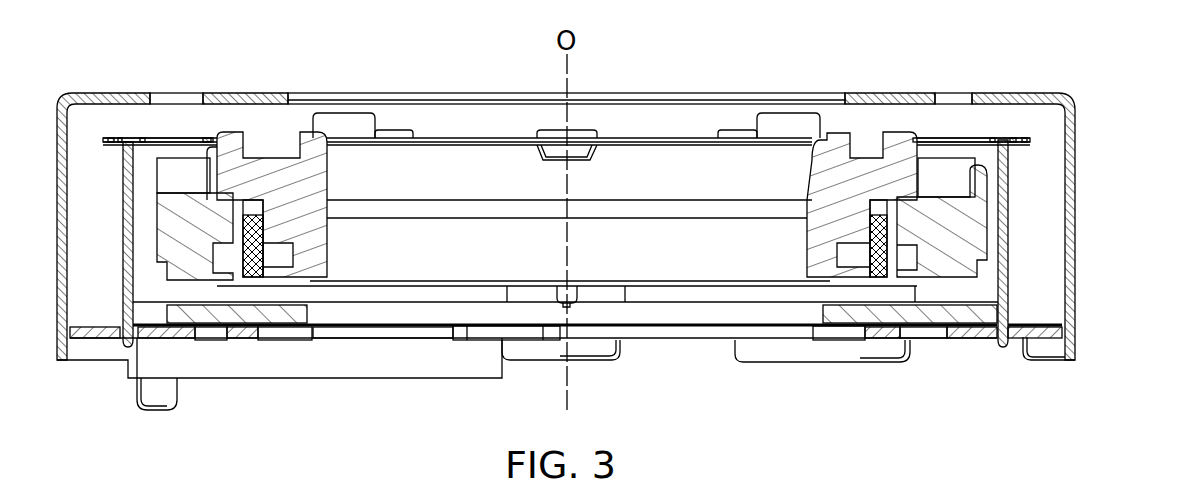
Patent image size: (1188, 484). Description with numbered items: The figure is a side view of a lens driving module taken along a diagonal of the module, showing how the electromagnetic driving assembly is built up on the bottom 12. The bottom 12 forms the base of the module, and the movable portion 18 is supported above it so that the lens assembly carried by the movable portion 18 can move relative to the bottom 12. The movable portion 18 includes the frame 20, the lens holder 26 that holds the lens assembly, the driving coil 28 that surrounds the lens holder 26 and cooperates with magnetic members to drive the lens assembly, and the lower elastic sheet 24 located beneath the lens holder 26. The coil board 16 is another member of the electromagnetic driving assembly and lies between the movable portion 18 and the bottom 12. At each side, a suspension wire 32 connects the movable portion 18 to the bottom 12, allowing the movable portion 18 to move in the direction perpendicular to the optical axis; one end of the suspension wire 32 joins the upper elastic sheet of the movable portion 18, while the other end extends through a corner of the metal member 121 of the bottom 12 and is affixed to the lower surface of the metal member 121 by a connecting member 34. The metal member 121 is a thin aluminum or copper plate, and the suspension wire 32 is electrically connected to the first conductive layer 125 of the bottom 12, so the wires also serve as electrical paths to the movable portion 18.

The bottom 12 is at (1048, 342).
The coil board 16 is at (887, 330).
The movable portion 18 is at (865, 118).
The frame 20 is at (180, 212).
The lower elastic sheet 24 is at (962, 287).
The lens holder 26 is at (270, 177).
The driving coil 28 is at (255, 258).
The suspension wire 32 is at (1008, 182).
The connecting member 34 is at (1005, 342).
The metal member 121 is at (1065, 330).
The first conductive layer 125 is at (1023, 322).